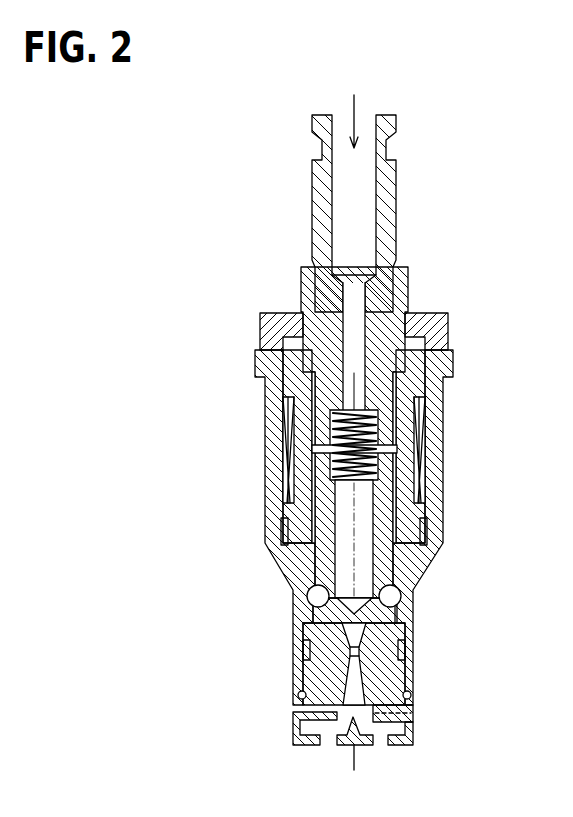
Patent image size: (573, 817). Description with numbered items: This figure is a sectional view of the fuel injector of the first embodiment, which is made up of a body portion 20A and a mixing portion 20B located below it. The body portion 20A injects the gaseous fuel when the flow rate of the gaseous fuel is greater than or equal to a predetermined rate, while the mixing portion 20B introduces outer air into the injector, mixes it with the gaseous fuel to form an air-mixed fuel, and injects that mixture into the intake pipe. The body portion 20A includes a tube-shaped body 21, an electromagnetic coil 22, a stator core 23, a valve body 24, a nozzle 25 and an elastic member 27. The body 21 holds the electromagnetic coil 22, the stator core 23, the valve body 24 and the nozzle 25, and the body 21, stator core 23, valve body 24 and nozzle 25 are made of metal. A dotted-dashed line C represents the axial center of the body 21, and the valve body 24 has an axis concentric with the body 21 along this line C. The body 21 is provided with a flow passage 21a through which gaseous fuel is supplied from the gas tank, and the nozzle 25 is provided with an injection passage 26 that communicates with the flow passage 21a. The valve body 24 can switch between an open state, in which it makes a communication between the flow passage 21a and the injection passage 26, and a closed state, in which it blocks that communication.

The body portion 20A is at (345, 408).
The mixing portion 20B is at (287, 753).
The body 21 is at (437, 421).
The flow passage 21a is at (392, 598).
The electromagnetic coil 22 is at (421, 458).
The stator core 23 is at (320, 413).
The valve body 24 is at (330, 611).
The nozzle 25 is at (392, 657).
The injection passage 26 is at (357, 694).
The elastic member 27 is at (332, 438).
The axial center C is at (354, 770).